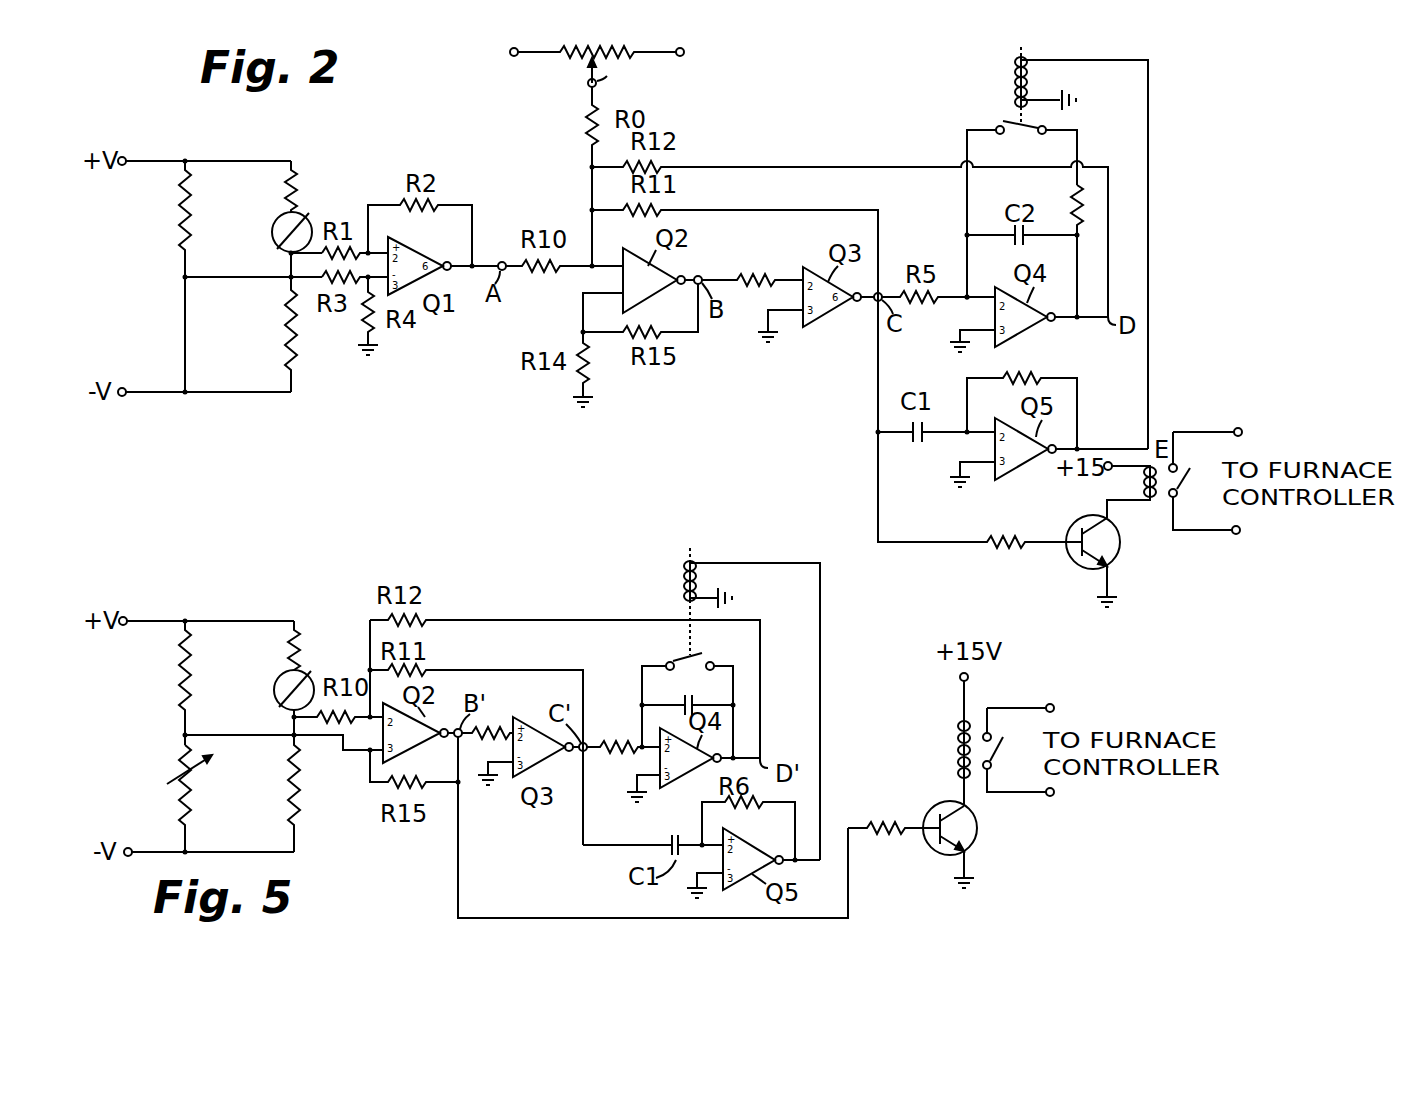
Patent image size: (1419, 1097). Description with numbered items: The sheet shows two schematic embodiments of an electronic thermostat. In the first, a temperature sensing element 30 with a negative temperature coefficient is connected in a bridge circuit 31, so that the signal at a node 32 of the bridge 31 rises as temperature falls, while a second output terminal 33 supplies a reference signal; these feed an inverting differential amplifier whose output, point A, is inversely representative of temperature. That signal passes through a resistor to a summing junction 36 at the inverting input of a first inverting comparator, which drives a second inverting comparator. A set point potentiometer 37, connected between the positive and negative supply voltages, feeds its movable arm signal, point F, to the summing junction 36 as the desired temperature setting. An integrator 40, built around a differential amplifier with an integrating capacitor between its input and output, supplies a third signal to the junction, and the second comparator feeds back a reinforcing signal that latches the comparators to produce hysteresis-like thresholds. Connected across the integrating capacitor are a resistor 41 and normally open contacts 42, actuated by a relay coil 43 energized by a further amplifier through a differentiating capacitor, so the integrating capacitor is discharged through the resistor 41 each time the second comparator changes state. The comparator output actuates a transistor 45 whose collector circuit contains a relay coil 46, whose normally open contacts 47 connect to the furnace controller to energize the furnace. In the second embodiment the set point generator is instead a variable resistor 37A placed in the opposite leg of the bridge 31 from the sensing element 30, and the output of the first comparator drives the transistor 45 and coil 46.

In FIG. 2, the temperature sensing element 30 is at (306, 217).
In FIG. 5, the temperature sensing element 30 is at (307, 674).
In FIG. 2, the bridge circuit 31 is at (248, 222).
In FIG. 5, the bridge circuit 31 is at (244, 679).
In FIG. 2, the node 32 is at (283, 247).
In FIG. 2, the second output terminal 33 is at (185, 277).
In FIG. 2, the summing junction 36 is at (620, 270).
In FIG. 2, the set point potentiometer 37 is at (578, 68).
In FIG. 5, the variable resistor 37A is at (168, 768).
In FIG. 5, the integrator 40 is at (666, 698).
In FIG. 2, the resistor 41 is at (1075, 192).
In FIG. 2, the normally open contacts 42 is at (990, 125).
In FIG. 5, the normally open contacts 42 is at (668, 660).
In FIG. 2, the coil 43 is at (1013, 82).
In FIG. 5, the coil 43 is at (684, 590).
In FIG. 2, the transistor 45 is at (1080, 568).
In FIG. 5, the transistor 45 is at (940, 855).
In FIG. 2, the coil 46 is at (1159, 500).
In FIG. 2, the normally open contacts 47 is at (1190, 480).
In FIG. 5, the normally open contacts 47 is at (999, 757).